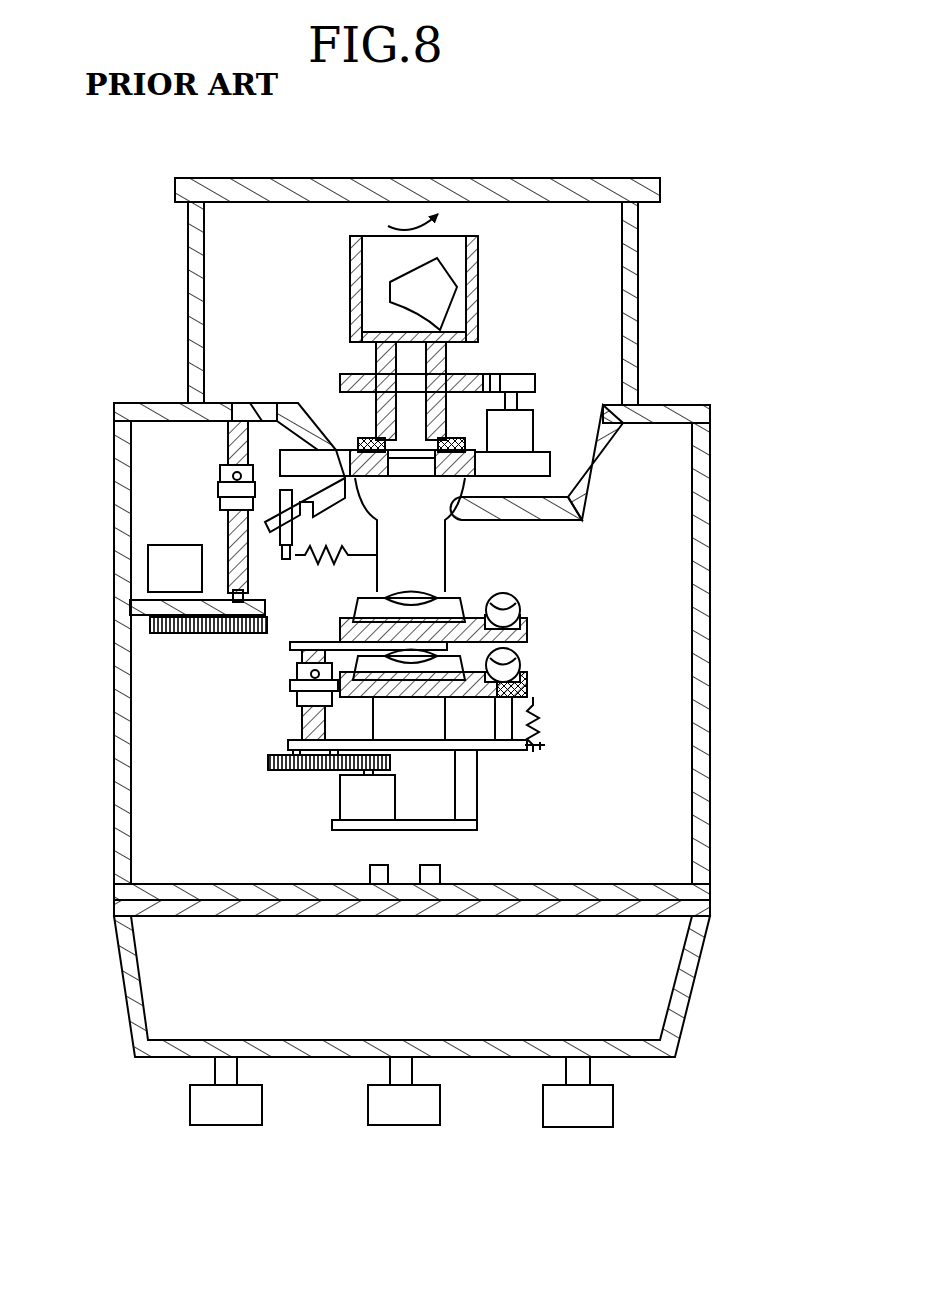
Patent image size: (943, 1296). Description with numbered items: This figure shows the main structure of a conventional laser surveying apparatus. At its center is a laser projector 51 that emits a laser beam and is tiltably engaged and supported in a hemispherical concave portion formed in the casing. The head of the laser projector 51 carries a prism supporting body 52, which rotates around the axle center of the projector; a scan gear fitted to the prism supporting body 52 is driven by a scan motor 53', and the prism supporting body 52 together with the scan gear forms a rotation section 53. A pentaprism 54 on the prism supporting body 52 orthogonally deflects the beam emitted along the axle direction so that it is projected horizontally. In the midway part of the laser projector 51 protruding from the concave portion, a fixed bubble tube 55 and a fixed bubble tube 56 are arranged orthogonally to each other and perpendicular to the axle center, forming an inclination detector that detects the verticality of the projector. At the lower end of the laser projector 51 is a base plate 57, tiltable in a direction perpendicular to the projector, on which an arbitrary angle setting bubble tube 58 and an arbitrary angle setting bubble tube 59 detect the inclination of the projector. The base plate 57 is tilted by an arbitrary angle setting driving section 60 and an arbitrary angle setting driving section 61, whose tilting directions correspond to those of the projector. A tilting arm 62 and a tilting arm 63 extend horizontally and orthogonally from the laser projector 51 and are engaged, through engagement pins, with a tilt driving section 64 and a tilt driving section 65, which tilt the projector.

The laser projector 51 is at (430, 565).
The prism supporting body 52 is at (480, 242).
The rotation section 53 is at (494, 292).
The scan motor 53' is at (472, 409).
The pentaprism 54 is at (406, 318).
The fixed bubble tube 55 is at (366, 600).
The fixed bubble tube 56 is at (520, 604).
The base plate 57 is at (487, 700).
The arbitrary angle setting bubble tube 58 is at (450, 656).
The arbitrary angle setting bubble tube 59 is at (520, 666).
The arbitrary angle setting driving section 60 is at (658, 404).
The arbitrary angle setting driving section 61 is at (312, 772).
The tilting arm 62 is at (330, 455).
The tilting arm 63 is at (308, 418).
The tilt driving section 64 is at (186, 530).
The tilt driving section 65 is at (162, 545).